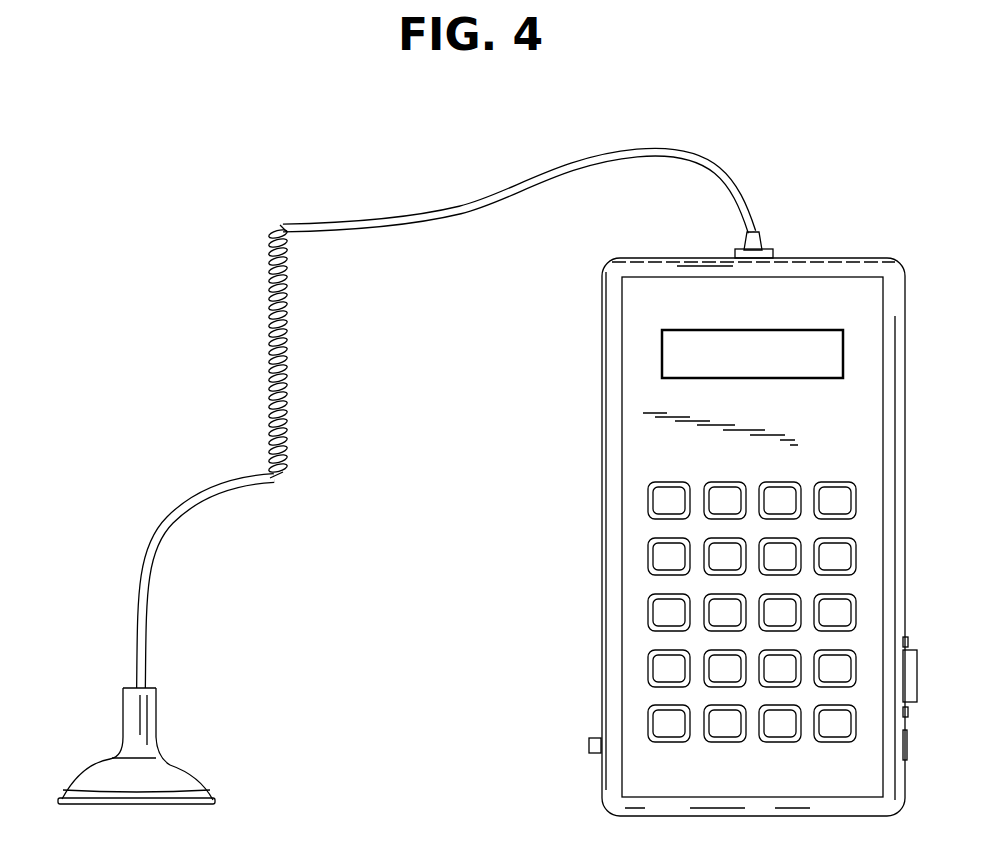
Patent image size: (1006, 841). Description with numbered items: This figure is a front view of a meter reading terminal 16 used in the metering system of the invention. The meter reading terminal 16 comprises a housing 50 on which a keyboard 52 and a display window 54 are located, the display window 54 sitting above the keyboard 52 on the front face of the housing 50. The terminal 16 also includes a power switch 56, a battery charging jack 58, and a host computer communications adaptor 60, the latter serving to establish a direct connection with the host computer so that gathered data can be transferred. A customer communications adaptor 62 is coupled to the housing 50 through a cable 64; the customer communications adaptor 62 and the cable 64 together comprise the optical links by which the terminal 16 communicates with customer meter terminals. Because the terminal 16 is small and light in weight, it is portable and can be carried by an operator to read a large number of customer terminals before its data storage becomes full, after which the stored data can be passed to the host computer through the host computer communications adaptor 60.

The meter reading terminal 16 is at (767, 537).
The housing 50 is at (905, 502).
The keyboard 52 is at (636, 493).
The display window 54 is at (660, 352).
The power switch 56 is at (591, 742).
The battery charging jack 58 is at (906, 745).
The host computer communications adaptor 60 is at (917, 676).
The customer communications adaptor 62 is at (170, 760).
The cable 64 is at (238, 483).